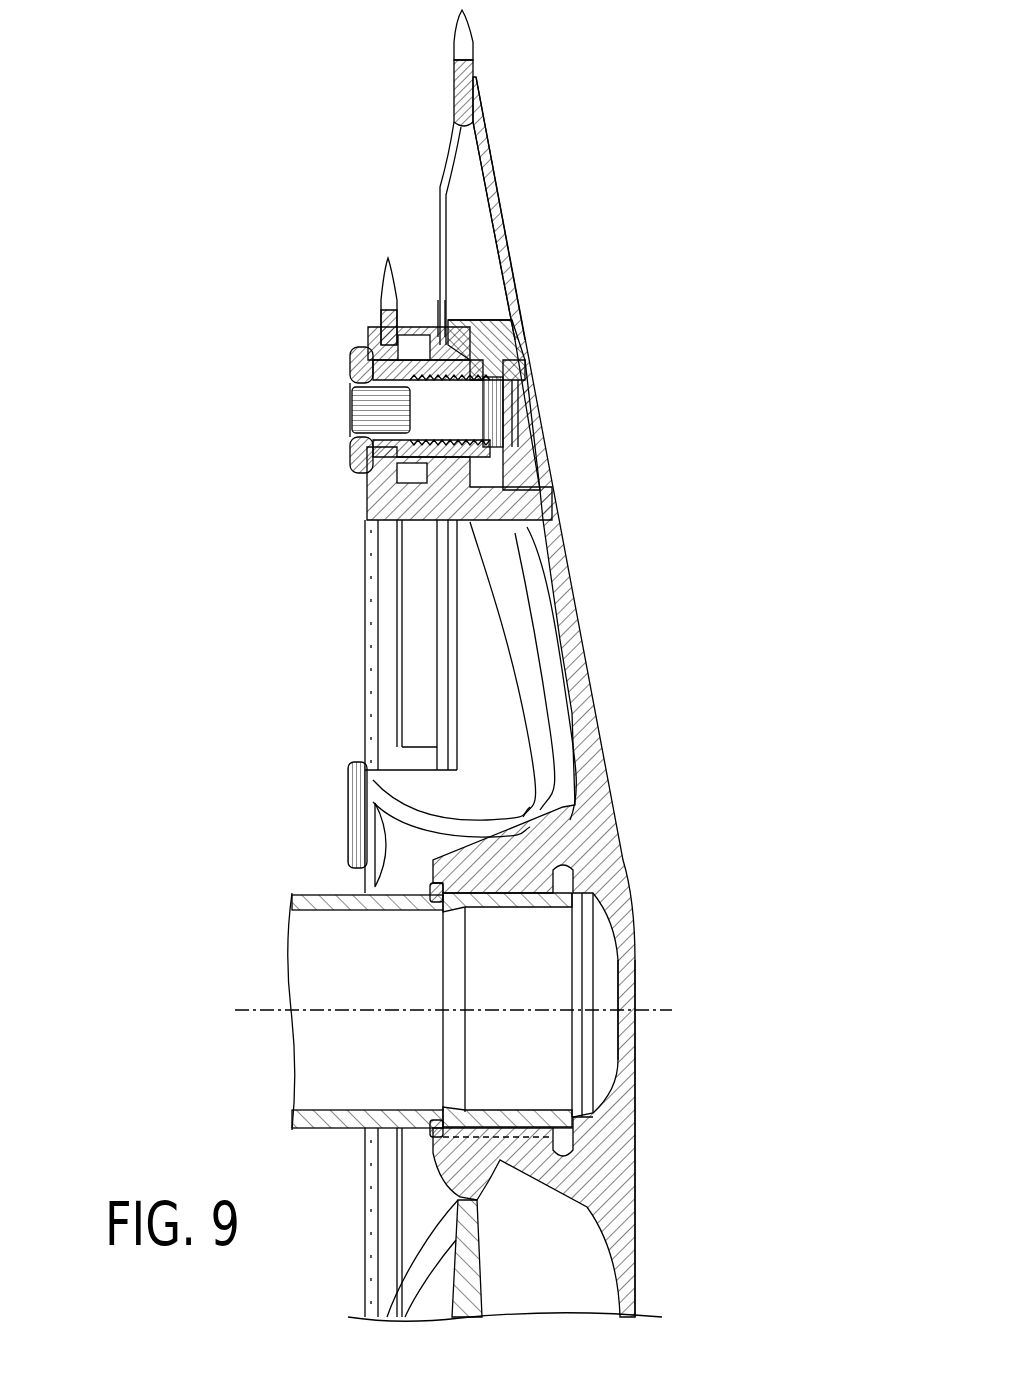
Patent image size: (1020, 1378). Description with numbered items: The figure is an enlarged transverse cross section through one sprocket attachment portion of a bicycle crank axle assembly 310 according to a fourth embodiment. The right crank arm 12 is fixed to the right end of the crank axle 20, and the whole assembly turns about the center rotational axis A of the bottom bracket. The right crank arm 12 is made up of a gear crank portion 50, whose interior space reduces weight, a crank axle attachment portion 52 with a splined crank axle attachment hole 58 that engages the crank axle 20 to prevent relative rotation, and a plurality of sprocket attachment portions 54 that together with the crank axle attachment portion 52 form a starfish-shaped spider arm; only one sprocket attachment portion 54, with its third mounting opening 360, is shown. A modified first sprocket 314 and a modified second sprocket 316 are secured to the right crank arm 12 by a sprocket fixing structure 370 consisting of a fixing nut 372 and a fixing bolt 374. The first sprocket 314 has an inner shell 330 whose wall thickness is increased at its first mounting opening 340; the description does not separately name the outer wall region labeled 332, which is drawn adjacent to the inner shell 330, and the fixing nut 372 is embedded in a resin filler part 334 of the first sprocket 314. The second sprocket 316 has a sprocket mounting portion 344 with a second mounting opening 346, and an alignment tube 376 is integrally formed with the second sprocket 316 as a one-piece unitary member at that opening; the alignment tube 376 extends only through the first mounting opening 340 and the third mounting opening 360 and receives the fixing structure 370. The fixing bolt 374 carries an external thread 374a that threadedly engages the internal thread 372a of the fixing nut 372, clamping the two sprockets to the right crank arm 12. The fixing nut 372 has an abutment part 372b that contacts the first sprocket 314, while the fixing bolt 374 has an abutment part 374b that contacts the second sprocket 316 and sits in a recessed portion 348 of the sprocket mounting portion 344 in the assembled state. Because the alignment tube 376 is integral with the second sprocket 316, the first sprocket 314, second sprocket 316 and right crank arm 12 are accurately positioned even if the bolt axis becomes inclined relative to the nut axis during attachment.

The right crank arm 12 is at (584, 617).
The crank axle 20 is at (310, 885).
The gear crank portion 50 is at (637, 1243).
The crank axle attachment portion 52 is at (637, 991).
The crank axle attachment hole 58 is at (527, 932).
The center rotational axis A is at (246, 1004).
The bicycle crank axle assembly 310 is at (229, 259).
The first sprocket 314 is at (509, 223).
The second sprocket 316 is at (362, 663).
The inner shell 330 is at (440, 190).
The outer surface 332 is at (500, 185).
The filler part 334 is at (500, 332).
The first mounting opening 340 is at (518, 428).
The sprocket mounting portion 344 is at (406, 504).
The second mounting opening 346 is at (372, 440).
The recessed portion 348 is at (355, 355).
The third mounting opening 360 is at (380, 418).
The sprocket fixing structure 370 is at (415, 568).
The fixing nut 372 is at (560, 395).
The internal thread 372a is at (507, 402).
The abutment part 372b is at (462, 318).
The fixing bolt 374 is at (342, 393).
The external thread 374a is at (490, 370).
The abutment part 374b is at (372, 380).
The alignment tube 376 is at (412, 343).
The sprocket attachment portion 54 is at (410, 476).